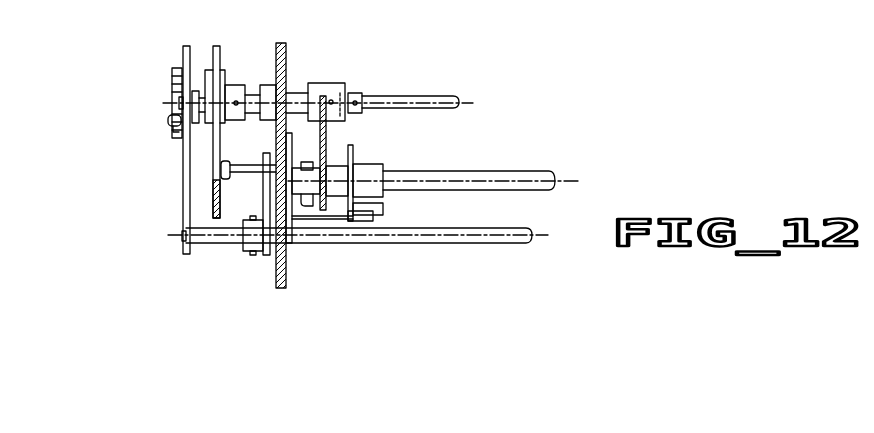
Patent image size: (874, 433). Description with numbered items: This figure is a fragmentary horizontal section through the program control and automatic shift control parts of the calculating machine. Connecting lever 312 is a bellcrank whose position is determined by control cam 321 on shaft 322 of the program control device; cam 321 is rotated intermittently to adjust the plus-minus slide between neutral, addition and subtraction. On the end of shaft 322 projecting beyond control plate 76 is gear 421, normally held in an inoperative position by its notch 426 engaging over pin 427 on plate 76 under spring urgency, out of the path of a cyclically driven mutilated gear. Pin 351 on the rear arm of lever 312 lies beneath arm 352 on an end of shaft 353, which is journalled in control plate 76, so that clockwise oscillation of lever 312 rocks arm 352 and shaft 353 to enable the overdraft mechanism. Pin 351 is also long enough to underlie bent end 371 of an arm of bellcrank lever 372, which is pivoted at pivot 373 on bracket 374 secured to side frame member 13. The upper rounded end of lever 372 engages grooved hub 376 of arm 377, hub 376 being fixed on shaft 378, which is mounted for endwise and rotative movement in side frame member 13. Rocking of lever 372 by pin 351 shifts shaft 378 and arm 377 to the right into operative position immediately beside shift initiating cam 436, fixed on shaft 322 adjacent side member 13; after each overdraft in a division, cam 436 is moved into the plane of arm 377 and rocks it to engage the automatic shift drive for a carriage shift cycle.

The side frame member 13 is at (273, 276).
The control plate 76 is at (180, 168).
The connecting lever 312 is at (236, 44).
The control cam 321 is at (222, 80).
The shaft 322 is at (418, 99).
The pin 351 is at (233, 167).
The arm 352 is at (262, 204).
The shaft 353 is at (452, 234).
The bent end 371 is at (310, 162).
The bellcrank lever 372 is at (378, 197).
The pivot 373 is at (367, 224).
The bracket 374 is at (382, 213).
The grooved hub 376 is at (350, 157).
The arm 377 is at (322, 98).
The shaft 378 is at (470, 166).
The gear 421 is at (169, 73).
The notch 426 is at (175, 108).
The pin 427 is at (164, 120).
The shift initiating cam 436 is at (312, 85).